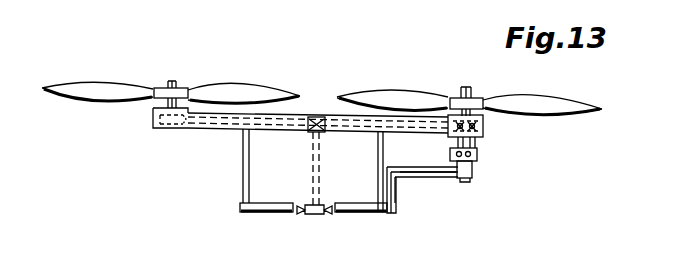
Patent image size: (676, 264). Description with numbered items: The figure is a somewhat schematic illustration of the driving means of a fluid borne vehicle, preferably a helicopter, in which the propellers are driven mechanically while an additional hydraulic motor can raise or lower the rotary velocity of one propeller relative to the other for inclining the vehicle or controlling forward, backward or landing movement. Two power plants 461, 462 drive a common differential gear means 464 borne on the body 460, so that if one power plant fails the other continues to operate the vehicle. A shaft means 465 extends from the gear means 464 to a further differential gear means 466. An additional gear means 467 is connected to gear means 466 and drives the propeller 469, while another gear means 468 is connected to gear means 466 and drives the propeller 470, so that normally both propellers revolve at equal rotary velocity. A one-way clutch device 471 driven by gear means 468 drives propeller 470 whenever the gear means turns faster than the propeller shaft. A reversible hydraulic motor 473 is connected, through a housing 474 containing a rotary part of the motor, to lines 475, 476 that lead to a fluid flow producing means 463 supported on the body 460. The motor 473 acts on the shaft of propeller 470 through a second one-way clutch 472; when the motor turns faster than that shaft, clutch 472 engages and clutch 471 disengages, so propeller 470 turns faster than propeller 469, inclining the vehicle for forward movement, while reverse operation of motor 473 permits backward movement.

The body 460 is at (247, 187).
The power plant 461 is at (262, 214).
The power plant 462 is at (358, 214).
The fluid flow producing means 463 is at (388, 213).
The differential gear means 464 is at (316, 215).
The shaft means 465 is at (322, 158).
The differential gear means 466 is at (311, 117).
The gear means 467 is at (168, 127).
The gear means 468 is at (482, 133).
The propeller 469 is at (129, 78).
The propeller 470 is at (555, 105).
The one-way clutch device 471 is at (483, 125).
The one-way clutch 472 is at (478, 153).
The reversible hydraulic motor 473 is at (476, 168).
The housing 474 is at (474, 183).
The line 475 is at (430, 178).
The line 476 is at (427, 169).